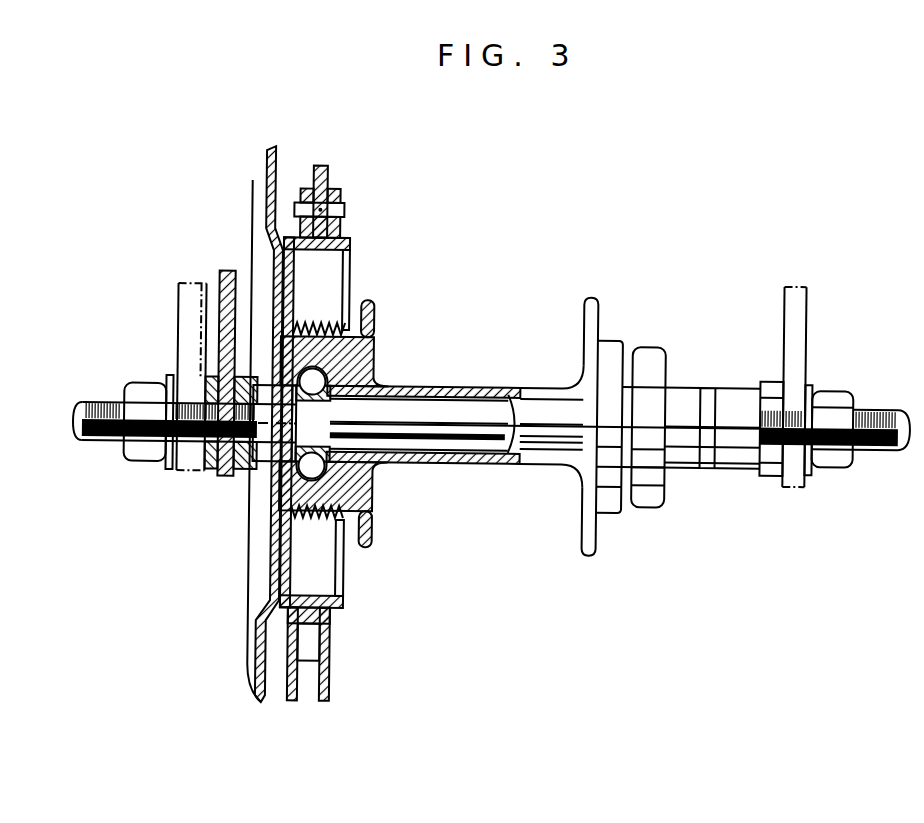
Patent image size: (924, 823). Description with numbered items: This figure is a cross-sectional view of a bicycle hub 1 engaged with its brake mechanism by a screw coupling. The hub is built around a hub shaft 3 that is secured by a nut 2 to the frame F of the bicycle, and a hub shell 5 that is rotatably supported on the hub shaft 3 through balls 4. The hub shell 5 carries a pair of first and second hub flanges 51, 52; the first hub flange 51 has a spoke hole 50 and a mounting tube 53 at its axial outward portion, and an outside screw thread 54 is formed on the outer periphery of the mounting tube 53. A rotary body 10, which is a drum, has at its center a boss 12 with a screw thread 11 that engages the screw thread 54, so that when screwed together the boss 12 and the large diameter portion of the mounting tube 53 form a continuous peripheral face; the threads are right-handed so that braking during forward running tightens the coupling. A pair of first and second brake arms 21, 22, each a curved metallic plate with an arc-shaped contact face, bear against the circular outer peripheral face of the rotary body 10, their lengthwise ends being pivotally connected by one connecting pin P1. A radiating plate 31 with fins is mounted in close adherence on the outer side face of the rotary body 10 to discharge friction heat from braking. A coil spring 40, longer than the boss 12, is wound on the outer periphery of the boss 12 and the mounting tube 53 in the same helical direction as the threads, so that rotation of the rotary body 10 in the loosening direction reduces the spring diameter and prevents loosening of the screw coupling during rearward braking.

The bicycle hub 1 is at (510, 377).
The nut 2 is at (147, 448).
The hub shaft 3 is at (98, 441).
The balls 4 is at (362, 466).
The hub shell 5 is at (458, 383).
The rotary body 10 is at (347, 234).
The screw thread 11 is at (219, 270).
The boss 12 is at (267, 281).
The first brake arm 21 is at (336, 198).
The second brake arm 22 is at (313, 163).
The radiating plate 31 is at (261, 166).
The coil spring 40 is at (347, 245).
The spoke hole 50 is at (376, 313).
The first hub flange 51 is at (372, 293).
The second hub flange 52 is at (597, 292).
The mounting tube 53 is at (378, 364).
The outside screw thread 54 is at (312, 321).
The frame F is at (177, 327).
The connecting pin P1 is at (345, 232).